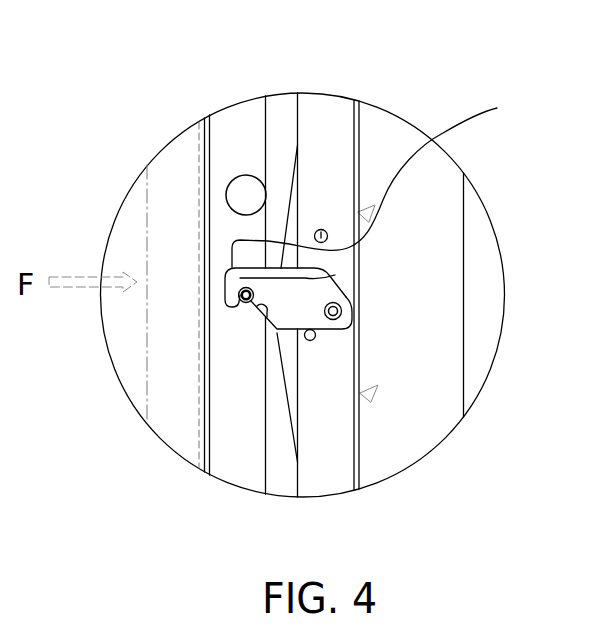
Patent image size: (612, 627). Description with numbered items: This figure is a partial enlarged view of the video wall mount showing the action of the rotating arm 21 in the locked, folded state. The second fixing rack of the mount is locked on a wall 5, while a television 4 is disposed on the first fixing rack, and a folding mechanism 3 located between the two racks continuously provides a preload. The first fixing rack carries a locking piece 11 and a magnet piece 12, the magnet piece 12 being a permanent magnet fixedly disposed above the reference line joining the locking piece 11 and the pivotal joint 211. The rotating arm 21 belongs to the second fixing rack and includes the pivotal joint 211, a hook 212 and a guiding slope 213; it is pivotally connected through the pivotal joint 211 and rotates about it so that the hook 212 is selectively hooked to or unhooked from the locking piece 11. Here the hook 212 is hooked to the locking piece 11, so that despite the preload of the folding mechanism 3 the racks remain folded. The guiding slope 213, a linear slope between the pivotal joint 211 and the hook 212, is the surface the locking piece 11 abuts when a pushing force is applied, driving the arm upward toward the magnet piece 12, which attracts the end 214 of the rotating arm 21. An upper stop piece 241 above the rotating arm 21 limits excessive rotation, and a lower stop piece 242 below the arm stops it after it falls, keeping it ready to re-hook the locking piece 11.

The folding mechanism 3 is at (277, 147).
The television 4 is at (170, 207).
The wall 5 is at (386, 122).
The locking piece 11 is at (225, 297).
The magnet piece 12 is at (235, 190).
The rotating arm 21 is at (300, 302).
The pivotal joint 211 is at (342, 311).
The hook 212 is at (335, 275).
The guiding slope 213 is at (300, 302).
The end of the rotating arm 214 is at (382, 182).
The upper stop piece 241 is at (321, 229).
The lower stop piece 242 is at (308, 341).